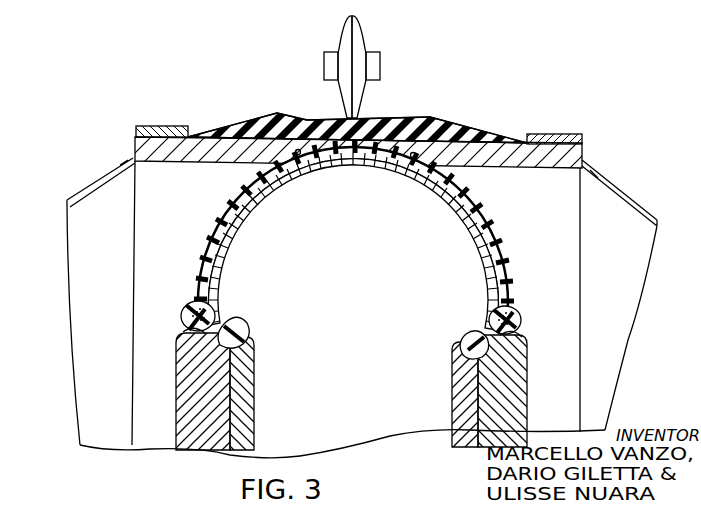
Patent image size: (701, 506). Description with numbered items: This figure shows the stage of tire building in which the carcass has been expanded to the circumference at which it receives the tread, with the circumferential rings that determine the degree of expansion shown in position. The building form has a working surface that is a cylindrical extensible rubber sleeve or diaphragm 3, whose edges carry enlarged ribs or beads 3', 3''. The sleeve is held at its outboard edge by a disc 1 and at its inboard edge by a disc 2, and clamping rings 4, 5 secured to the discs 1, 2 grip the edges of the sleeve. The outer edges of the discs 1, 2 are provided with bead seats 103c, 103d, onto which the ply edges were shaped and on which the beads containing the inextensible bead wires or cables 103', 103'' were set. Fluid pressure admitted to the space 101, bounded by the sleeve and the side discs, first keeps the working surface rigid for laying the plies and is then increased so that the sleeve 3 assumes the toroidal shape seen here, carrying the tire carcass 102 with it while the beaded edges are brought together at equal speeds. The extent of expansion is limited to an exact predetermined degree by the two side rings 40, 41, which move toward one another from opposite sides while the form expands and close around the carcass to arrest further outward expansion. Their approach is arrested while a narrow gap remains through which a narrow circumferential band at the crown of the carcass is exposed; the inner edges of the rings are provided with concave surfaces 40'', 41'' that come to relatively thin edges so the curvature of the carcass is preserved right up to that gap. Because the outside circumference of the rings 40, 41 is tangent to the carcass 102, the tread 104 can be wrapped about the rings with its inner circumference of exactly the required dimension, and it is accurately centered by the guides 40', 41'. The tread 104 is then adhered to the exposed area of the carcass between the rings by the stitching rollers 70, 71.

The disc 1 is at (185, 409).
The disc 2 is at (515, 396).
The sleeve or diaphragm 3 is at (353, 241).
The rib or bead 3' is at (251, 334).
The rib or bead 3'' is at (442, 344).
The clamping ring 4 is at (243, 376).
The clamping ring 5 is at (452, 378).
The side ring 40 is at (242, 127).
The guide 40' is at (172, 113).
The concave surface 40'' is at (275, 115).
The side ring 41 is at (467, 131).
The guide 41' is at (542, 119).
The concave surface 41'' is at (421, 117).
The stitching roller 70 is at (350, 45).
The stitching roller 71 is at (364, 45).
The space 101 is at (358, 433).
The tire carcass 102 is at (462, 201).
The bead wire or cable 103' is at (173, 304).
The bead wire or cable 103'' is at (520, 287).
The bead seat 103c is at (183, 332).
The bead seat 103d is at (518, 333).
The tread 104 is at (440, 118).